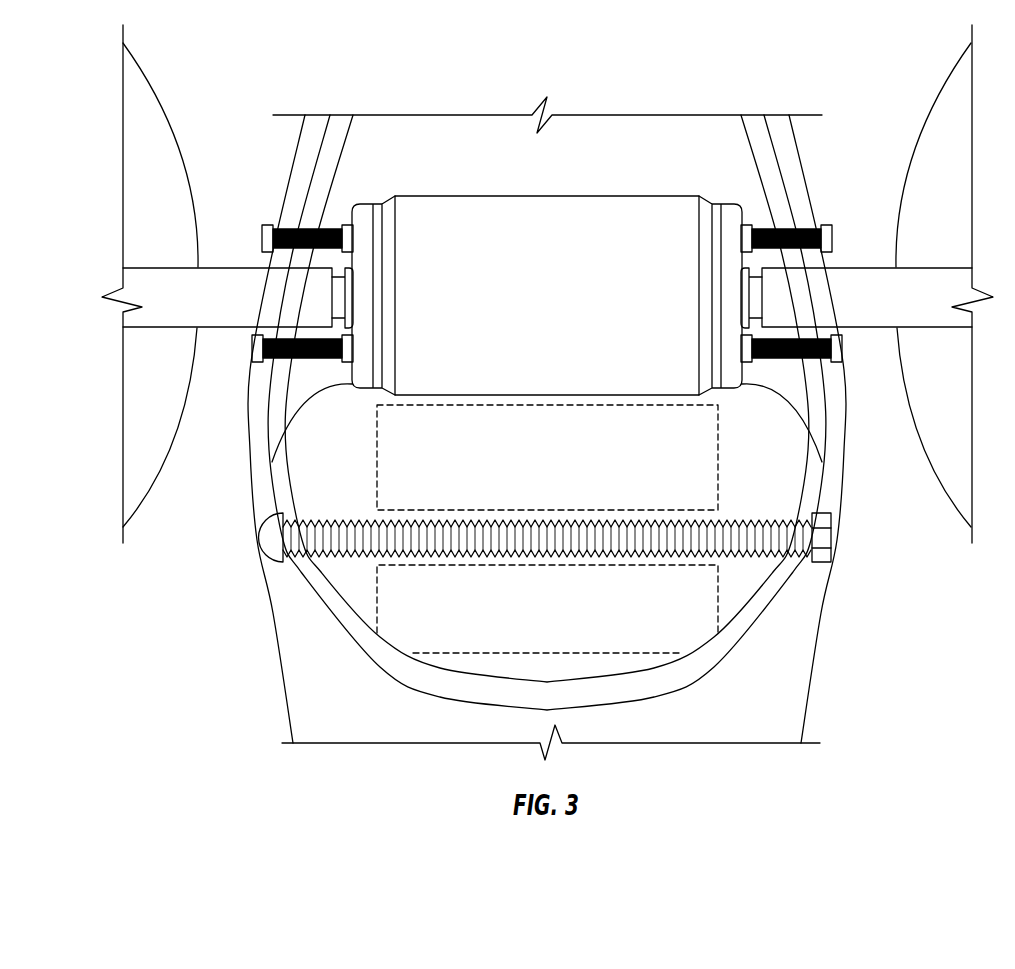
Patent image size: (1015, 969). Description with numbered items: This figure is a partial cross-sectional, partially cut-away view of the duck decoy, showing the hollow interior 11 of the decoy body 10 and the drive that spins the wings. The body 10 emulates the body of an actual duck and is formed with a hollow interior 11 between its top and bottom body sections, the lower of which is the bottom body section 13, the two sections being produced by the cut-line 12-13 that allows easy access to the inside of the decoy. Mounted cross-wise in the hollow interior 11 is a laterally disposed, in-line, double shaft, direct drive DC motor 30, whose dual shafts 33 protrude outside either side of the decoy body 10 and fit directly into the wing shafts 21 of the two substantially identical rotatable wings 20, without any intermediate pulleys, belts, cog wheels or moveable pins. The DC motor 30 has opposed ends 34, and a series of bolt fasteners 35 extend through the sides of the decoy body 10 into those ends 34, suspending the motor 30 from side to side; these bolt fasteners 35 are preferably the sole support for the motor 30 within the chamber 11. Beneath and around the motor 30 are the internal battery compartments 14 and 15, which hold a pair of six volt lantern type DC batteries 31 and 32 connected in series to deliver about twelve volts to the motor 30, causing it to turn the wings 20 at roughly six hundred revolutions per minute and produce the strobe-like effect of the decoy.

The body 10 is at (833, 530).
The hollow interior 11 is at (647, 152).
The cut-line 12-13 is at (778, 600).
The bottom body section 13 is at (818, 678).
The battery compartment 14 is at (397, 462).
The battery compartment 15 is at (404, 600).
The rotatable wings 20 is at (150, 490).
The wing shafts 21 is at (178, 328).
The DC motor 30 is at (561, 311).
The battery 31 is at (561, 469).
The battery 32 is at (561, 622).
The dual shafts 33 is at (335, 250).
The opposed ends 34 is at (278, 426).
The bolt fasteners 35 is at (262, 240).